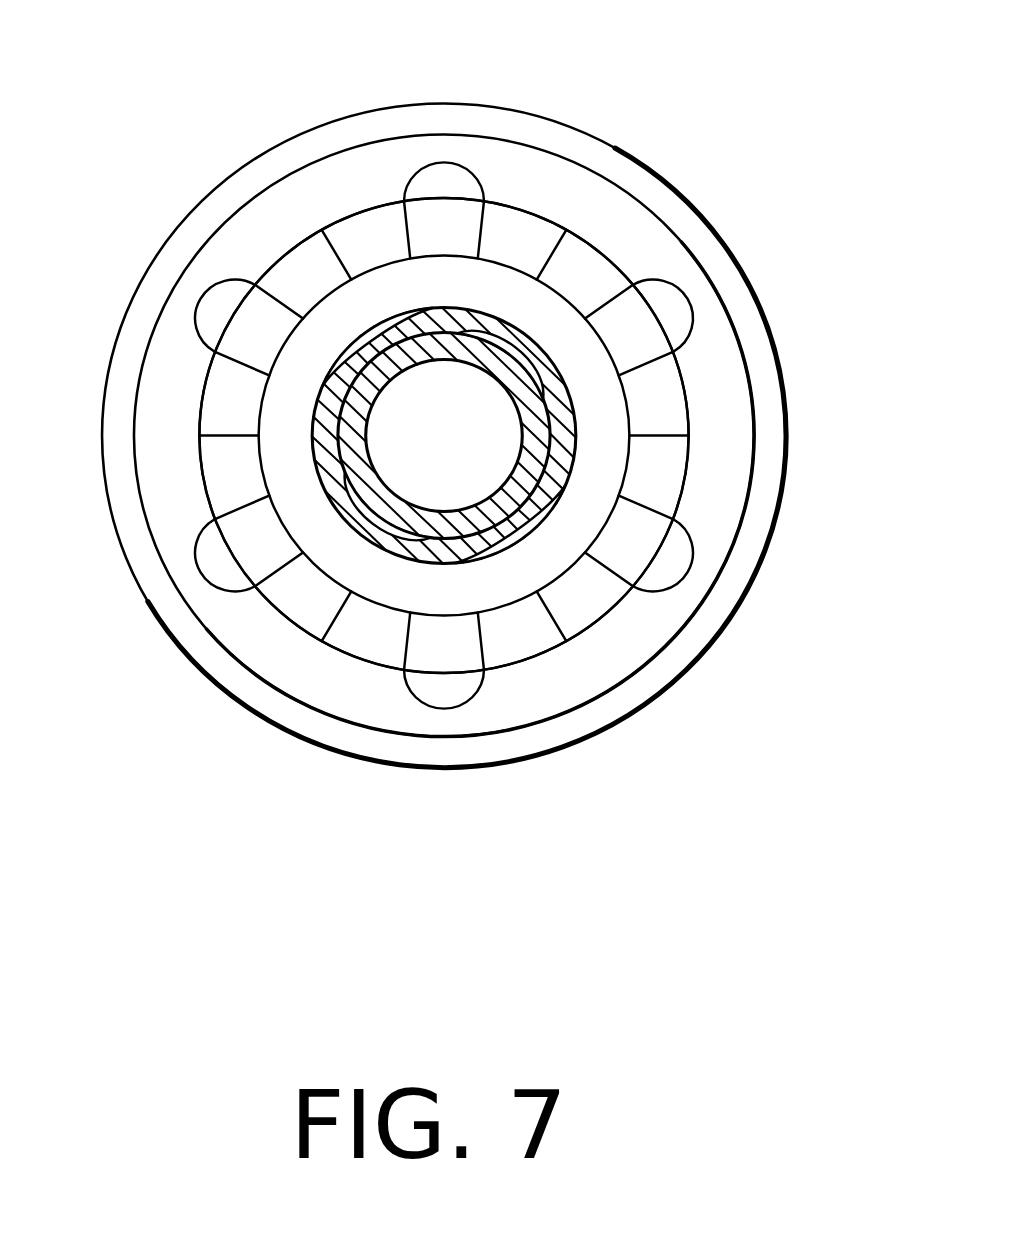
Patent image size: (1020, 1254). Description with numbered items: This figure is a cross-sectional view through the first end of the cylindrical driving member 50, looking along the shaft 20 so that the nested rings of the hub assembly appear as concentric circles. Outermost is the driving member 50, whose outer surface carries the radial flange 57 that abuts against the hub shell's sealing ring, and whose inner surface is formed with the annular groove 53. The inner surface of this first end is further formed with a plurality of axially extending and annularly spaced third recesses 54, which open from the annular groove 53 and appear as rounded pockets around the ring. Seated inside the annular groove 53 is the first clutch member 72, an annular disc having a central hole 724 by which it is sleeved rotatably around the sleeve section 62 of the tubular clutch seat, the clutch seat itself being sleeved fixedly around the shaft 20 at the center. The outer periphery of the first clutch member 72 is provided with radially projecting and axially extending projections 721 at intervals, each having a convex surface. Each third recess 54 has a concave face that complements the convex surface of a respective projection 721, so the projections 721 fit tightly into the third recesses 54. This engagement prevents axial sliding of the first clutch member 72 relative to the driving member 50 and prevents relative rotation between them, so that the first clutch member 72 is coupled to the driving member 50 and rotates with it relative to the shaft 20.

The shaft 20 is at (390, 493).
The cylindrical driving member 50 is at (568, 117).
The annular groove 53 is at (613, 265).
The third recesses 54 is at (692, 310).
The radial flange 57 is at (628, 173).
The sleeve section 62 is at (327, 418).
The first clutch member 72 is at (345, 203).
The projections 721 is at (440, 177).
The central hole 724 is at (353, 350).